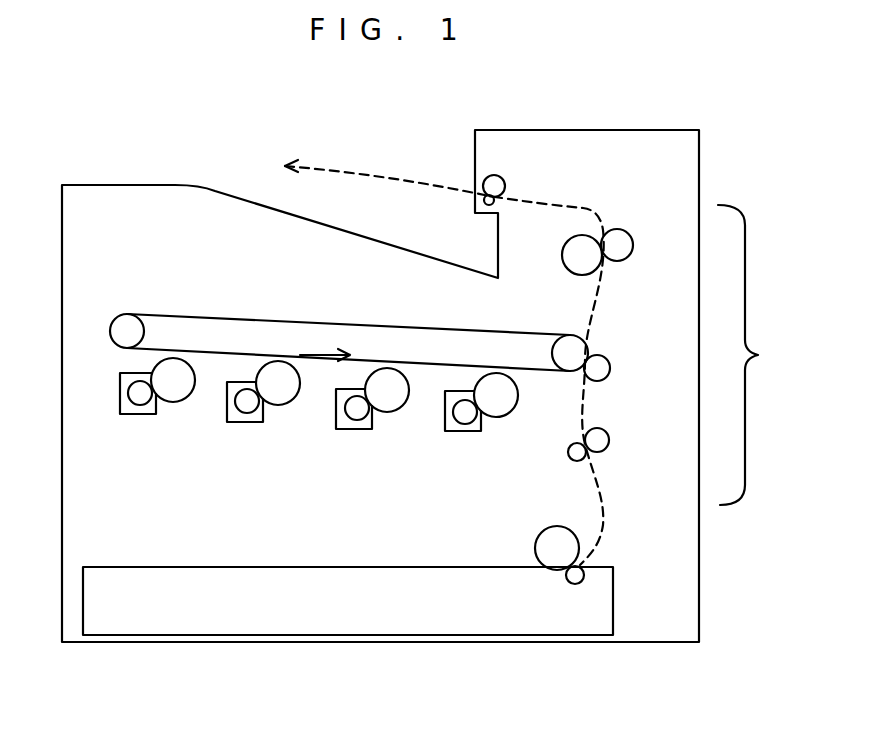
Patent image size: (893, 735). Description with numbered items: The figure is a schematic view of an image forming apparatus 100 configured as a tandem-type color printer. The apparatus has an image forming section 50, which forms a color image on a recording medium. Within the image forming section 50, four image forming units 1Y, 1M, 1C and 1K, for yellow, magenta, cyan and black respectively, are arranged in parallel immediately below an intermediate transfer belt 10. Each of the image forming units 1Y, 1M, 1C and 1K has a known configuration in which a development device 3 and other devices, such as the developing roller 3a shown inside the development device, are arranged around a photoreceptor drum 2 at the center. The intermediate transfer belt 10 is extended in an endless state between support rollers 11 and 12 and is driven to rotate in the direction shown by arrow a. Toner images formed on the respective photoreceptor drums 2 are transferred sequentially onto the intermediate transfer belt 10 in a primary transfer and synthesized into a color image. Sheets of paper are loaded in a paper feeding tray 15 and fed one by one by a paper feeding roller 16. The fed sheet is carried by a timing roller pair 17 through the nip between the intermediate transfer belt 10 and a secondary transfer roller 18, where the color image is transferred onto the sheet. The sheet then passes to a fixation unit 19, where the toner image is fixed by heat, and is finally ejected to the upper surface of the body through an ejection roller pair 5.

The image forming apparatus 100 is at (170, 105).
The image forming unit 1Y is at (165, 432).
The image forming unit 1M is at (270, 442).
The image forming unit 1C is at (378, 445).
The image forming unit 1K is at (488, 448).
The photoreceptor drum 2 is at (173, 402).
The development device 3 is at (138, 414).
The developing roller 3a is at (128, 400).
The ejection roller pair 5 is at (503, 177).
The intermediate transfer belt 10 is at (268, 322).
The support roller 11 is at (556, 340).
The support roller 12 is at (140, 318).
The paper feeding tray 15 is at (405, 567).
The paper feeding roller 16 is at (535, 548).
The timing roller pair 17 is at (610, 440).
The secondary transfer roller 18 is at (611, 368).
The fixation unit 19 is at (618, 229).
The image forming section 50 is at (757, 355).
The arrow a is at (335, 350).